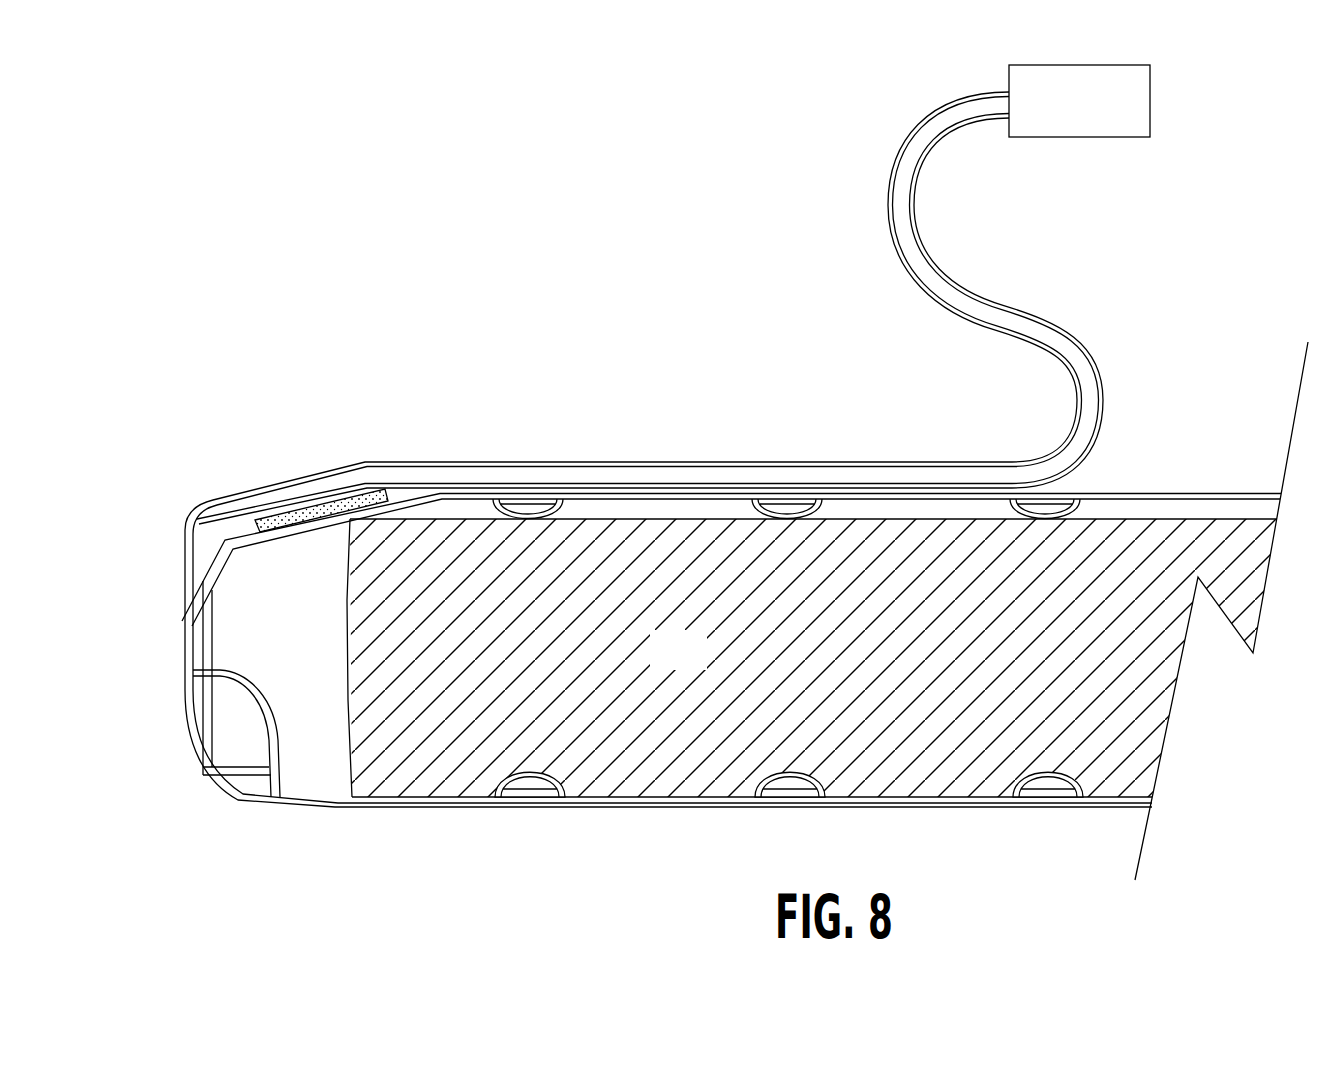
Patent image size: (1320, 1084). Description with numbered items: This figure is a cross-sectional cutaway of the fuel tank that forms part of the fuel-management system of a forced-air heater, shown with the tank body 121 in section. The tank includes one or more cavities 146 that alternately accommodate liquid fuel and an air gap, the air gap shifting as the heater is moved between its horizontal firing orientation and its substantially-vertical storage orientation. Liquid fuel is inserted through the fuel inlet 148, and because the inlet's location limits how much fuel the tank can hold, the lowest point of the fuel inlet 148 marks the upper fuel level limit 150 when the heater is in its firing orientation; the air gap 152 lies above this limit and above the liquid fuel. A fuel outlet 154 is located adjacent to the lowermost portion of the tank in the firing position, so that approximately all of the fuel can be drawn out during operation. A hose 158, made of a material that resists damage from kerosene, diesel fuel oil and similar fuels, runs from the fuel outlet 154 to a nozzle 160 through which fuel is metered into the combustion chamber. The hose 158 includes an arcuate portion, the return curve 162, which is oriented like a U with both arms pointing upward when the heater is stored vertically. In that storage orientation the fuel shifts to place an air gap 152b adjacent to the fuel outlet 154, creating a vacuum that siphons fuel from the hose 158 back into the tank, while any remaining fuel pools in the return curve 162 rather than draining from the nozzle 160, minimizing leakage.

The foam cushion body 121 is at (698, 664).
The cavity 146 is at (250, 568).
The fuel inlet 148 is at (313, 512).
The upper fuel level limit 150 is at (443, 555).
The air gap 152 is at (636, 508).
The air gap 152b is at (234, 637).
The fuel outlet 154 is at (262, 780).
The hose 158 is at (803, 478).
The nozzle 160 is at (1073, 126).
The return curve 162 is at (1088, 366).